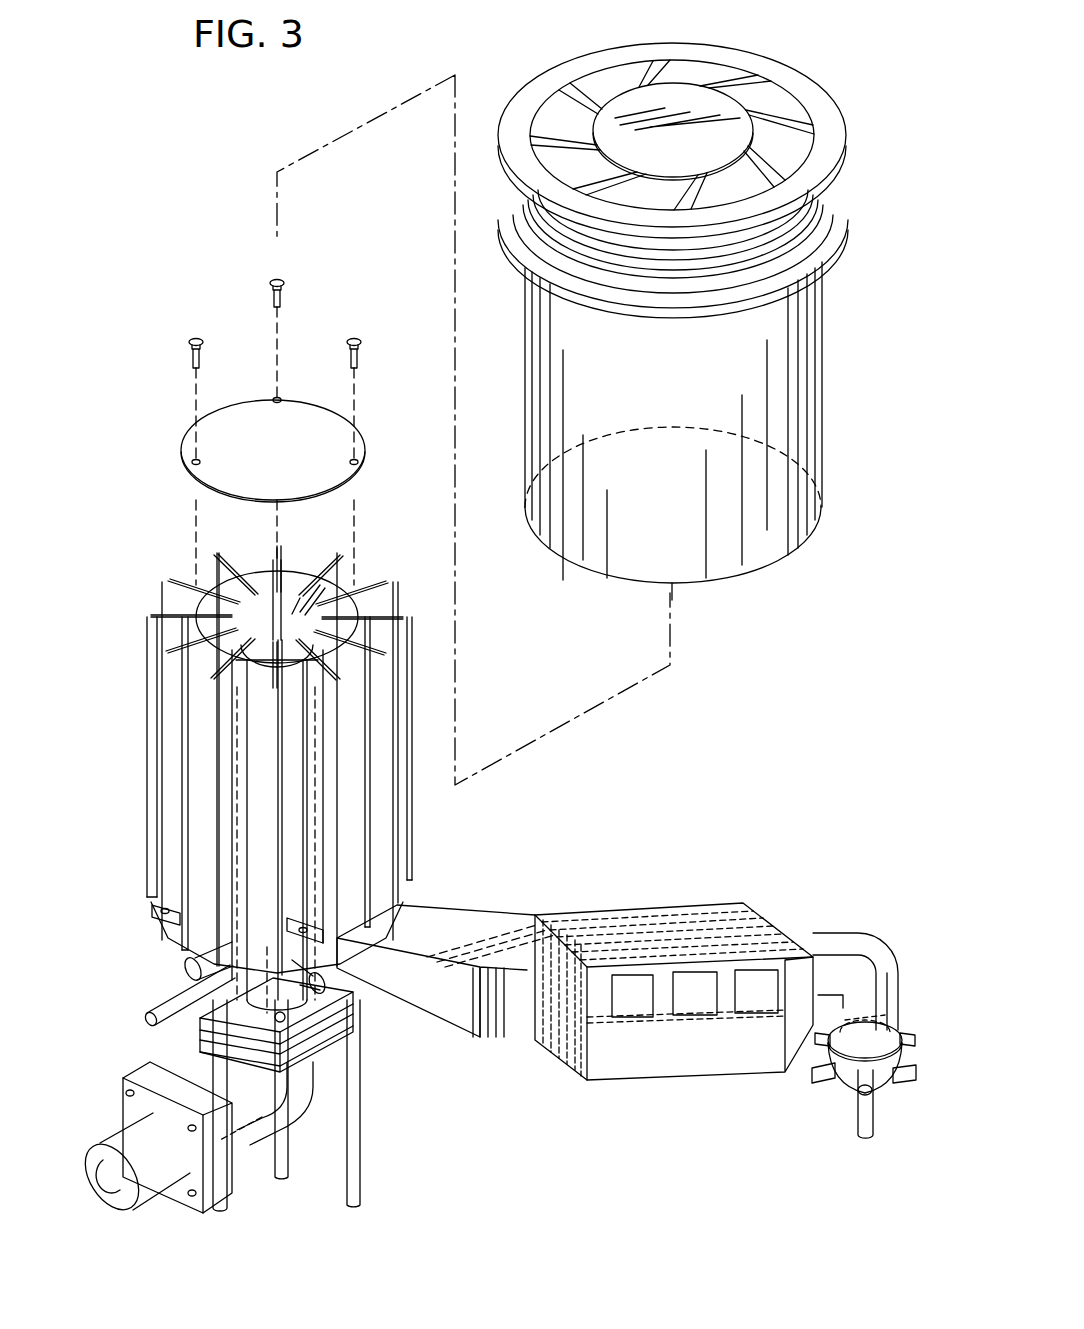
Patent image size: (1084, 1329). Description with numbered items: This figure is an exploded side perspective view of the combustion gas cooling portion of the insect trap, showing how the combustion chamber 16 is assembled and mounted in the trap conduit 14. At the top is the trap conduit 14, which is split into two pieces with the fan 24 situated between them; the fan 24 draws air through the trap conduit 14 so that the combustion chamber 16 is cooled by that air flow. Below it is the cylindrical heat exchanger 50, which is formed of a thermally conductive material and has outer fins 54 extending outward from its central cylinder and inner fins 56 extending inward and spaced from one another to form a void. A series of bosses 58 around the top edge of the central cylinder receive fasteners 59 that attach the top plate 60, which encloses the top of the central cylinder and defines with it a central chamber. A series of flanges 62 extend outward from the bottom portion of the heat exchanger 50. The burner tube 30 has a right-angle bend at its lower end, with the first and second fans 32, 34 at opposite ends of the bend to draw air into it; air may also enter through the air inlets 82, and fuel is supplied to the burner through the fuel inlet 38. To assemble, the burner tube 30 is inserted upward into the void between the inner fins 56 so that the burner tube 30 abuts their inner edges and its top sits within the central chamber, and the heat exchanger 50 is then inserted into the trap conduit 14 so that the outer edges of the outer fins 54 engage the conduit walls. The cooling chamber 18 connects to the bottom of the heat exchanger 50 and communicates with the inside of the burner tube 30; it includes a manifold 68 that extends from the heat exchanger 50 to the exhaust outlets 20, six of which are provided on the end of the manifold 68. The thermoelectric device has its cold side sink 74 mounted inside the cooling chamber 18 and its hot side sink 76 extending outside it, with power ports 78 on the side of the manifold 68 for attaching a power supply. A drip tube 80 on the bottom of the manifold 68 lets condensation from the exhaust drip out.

The trap conduit 14 is at (822, 322).
The combustion chamber 16 is at (212, 1076).
The cooling chamber 18 is at (820, 937).
The exhaust outlets 20 is at (907, 1030).
The fan 24 is at (838, 145).
The burner tube 30 is at (288, 1105).
The first fan 32 is at (295, 575).
The second fan 34 is at (160, 1072).
The fuel inlet 38 is at (172, 1000).
The cylindrical heat exchanger 50 is at (253, 786).
The outer fins 54 is at (392, 600).
The inner fins 56 is at (345, 565).
The bosses 58 is at (275, 560).
The fasteners 59 is at (272, 287).
The top plate 60 is at (229, 458).
The flanges 62 is at (157, 905).
The manifold 68 is at (437, 925).
The cold side sink 74 is at (605, 918).
The hot side sink 76 is at (674, 975).
The power ports 78 is at (603, 1072).
The drip tube 80 is at (858, 1125).
The air inlets 82 is at (185, 963).